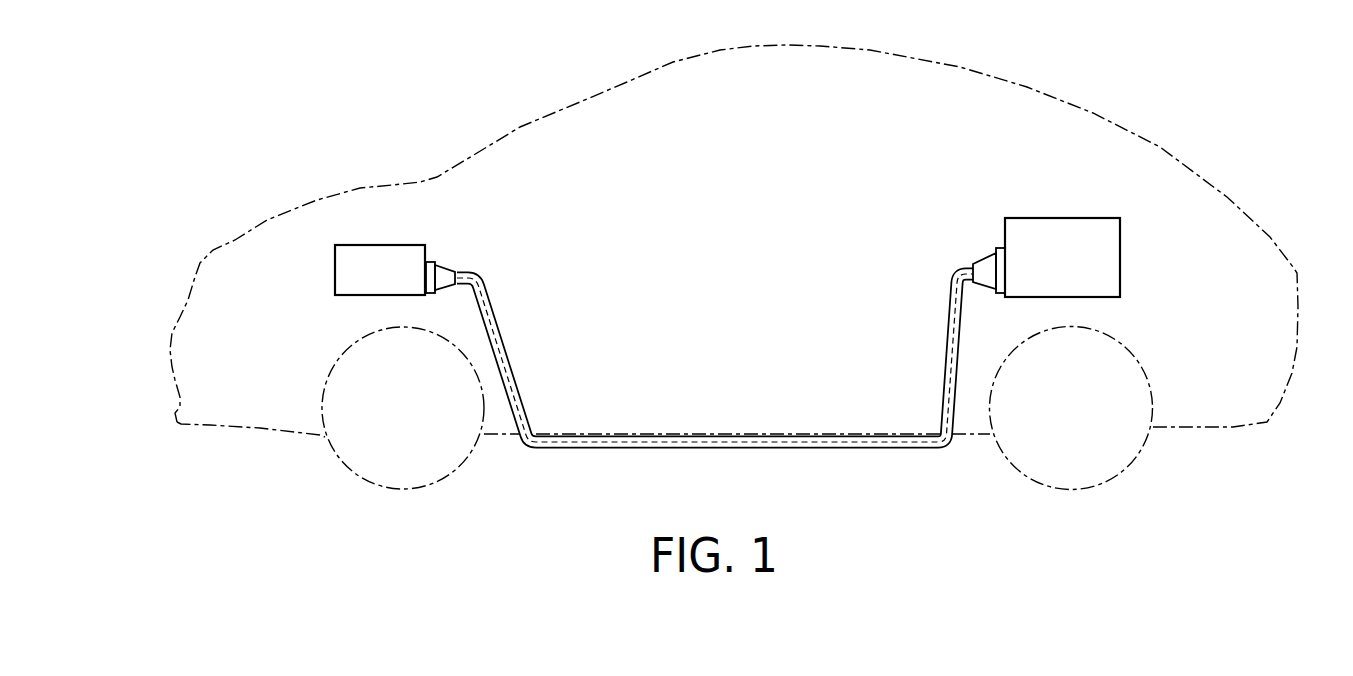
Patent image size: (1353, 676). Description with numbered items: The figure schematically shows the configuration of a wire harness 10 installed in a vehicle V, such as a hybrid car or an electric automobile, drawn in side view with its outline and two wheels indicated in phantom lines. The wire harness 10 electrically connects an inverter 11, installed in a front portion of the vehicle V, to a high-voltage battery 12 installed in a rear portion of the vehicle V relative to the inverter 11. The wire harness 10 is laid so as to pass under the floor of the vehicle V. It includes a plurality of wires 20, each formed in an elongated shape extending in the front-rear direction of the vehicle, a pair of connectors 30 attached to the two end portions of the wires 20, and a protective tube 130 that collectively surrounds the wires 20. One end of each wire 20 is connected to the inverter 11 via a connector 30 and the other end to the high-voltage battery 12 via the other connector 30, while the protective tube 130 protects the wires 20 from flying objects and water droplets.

The vehicle V is at (1030, 87).
The wire harness 10 is at (718, 296).
The inverter 11 is at (395, 244).
The high-voltage battery 12 is at (1055, 218).
The wires 20 is at (497, 331).
The connectors 30 is at (443, 264).
The protective tube 130 is at (487, 300).